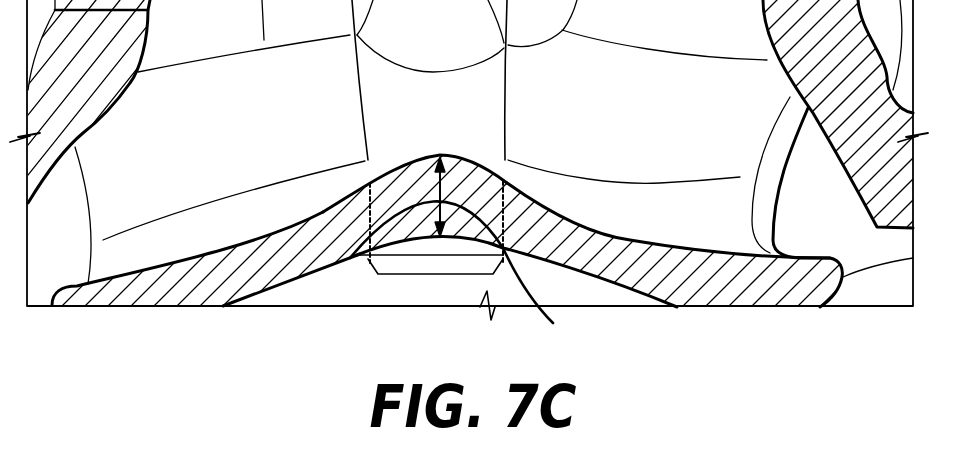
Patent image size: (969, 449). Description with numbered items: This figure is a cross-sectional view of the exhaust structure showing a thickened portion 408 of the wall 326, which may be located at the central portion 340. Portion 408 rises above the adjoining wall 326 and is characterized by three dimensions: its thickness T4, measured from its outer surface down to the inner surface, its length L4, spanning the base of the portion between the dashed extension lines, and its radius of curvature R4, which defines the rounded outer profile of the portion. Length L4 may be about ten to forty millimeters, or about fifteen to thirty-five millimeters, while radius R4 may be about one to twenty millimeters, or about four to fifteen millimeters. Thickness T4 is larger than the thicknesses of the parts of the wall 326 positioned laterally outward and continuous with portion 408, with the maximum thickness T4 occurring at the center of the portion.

The wall 326 is at (267, 291).
The central portion 340 is at (422, 116).
The portion 408 is at (400, 162).
The radius of curvature R4 is at (380, 178).
The length L4 is at (423, 277).
The thickness T4 is at (506, 251).